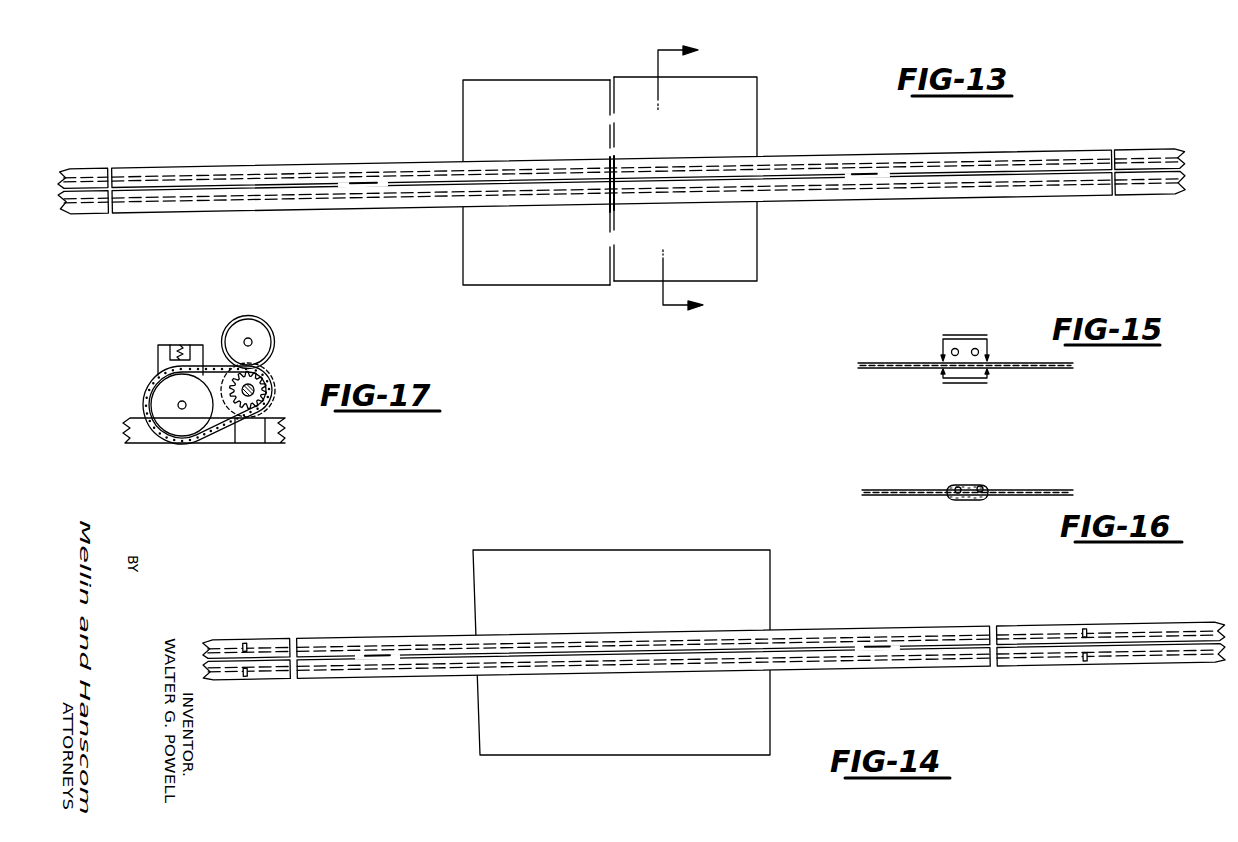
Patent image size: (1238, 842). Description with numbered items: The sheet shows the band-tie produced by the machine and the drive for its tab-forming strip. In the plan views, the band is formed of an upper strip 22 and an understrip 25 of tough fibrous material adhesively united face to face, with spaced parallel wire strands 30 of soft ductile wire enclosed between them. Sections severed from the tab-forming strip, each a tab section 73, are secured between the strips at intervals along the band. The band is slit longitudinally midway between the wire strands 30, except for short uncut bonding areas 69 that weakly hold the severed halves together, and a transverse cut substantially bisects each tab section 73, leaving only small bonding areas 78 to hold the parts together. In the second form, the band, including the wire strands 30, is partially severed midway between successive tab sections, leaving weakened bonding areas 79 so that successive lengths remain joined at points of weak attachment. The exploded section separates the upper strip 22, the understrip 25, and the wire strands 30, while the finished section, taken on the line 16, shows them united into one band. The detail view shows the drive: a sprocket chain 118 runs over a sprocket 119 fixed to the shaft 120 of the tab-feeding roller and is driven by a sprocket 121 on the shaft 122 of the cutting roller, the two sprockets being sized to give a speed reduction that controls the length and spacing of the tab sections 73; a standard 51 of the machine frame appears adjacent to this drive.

In FIG. 13, the section line 16— 16 is at (715, 40).
In FIG. 15, the upper strip 22 is at (988, 334).
In FIG. 16, the upper strip 22 is at (986, 490).
In FIG. 15, the understrip 25 is at (987, 383).
In FIG. 16, the understrip 25 is at (968, 500).
In FIG. 15, the wire strands 30 is at (975, 348).
In FIG. 16, the wire strands 30 is at (980, 486).
In FIG. 17, the standards 51 is at (158, 360).
In FIG. 13, the bonding areas 69 is at (347, 195).
In FIG. 14, the bonding areas 69 is at (393, 657).
In FIG. 13, the tab section 73 is at (548, 288).
In FIG. 14, the tab section 73 is at (545, 558).
In FIG. 15, the tab section 73 is at (893, 345).
In FIG. 16, the tab section 73 is at (893, 475).
In FIG. 13, the bonding areas 78 is at (607, 147).
In FIG. 14, the weakened bonding areas 79 is at (246, 645).
In FIG. 17, the sprocket chain 118 is at (232, 424).
In FIG. 17, the sprocket 119 is at (163, 414).
In FIG. 17, the shaft 120 is at (190, 412).
In FIG. 17, the sprocket 121 is at (228, 380).
In FIG. 17, the shaft 122 is at (252, 388).